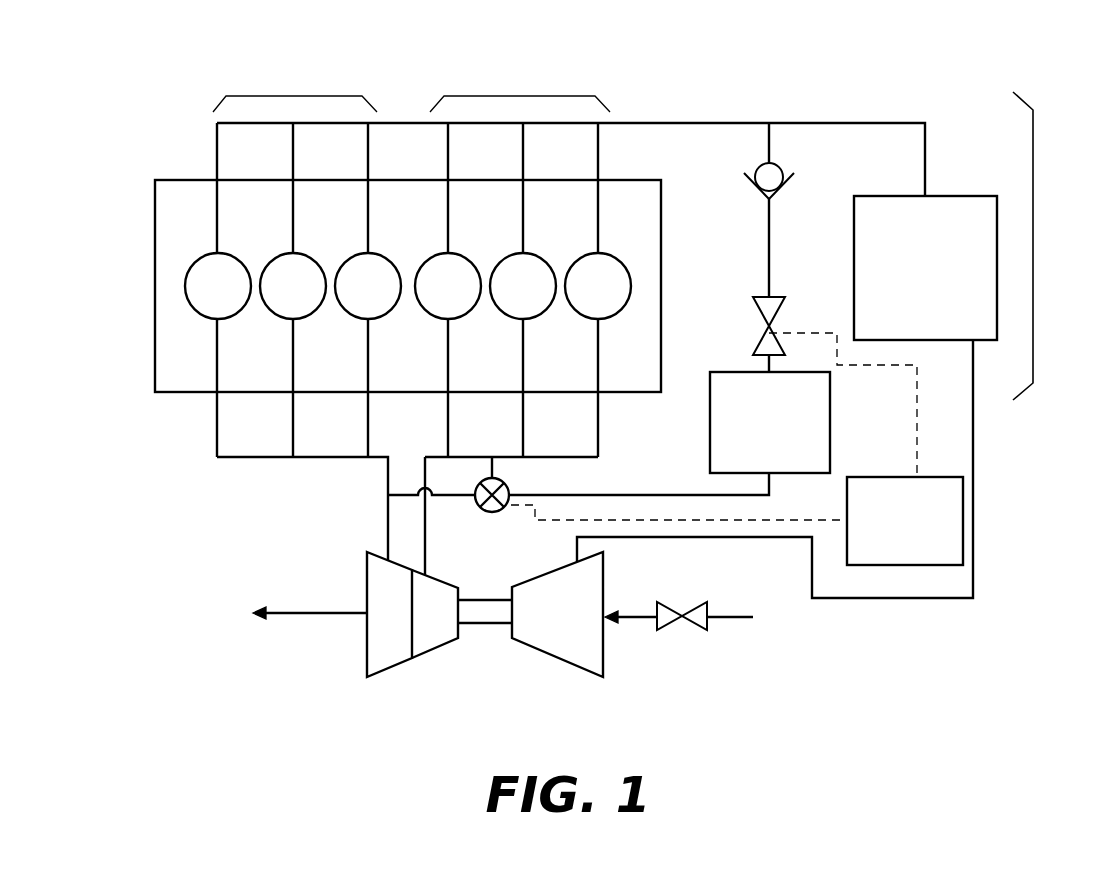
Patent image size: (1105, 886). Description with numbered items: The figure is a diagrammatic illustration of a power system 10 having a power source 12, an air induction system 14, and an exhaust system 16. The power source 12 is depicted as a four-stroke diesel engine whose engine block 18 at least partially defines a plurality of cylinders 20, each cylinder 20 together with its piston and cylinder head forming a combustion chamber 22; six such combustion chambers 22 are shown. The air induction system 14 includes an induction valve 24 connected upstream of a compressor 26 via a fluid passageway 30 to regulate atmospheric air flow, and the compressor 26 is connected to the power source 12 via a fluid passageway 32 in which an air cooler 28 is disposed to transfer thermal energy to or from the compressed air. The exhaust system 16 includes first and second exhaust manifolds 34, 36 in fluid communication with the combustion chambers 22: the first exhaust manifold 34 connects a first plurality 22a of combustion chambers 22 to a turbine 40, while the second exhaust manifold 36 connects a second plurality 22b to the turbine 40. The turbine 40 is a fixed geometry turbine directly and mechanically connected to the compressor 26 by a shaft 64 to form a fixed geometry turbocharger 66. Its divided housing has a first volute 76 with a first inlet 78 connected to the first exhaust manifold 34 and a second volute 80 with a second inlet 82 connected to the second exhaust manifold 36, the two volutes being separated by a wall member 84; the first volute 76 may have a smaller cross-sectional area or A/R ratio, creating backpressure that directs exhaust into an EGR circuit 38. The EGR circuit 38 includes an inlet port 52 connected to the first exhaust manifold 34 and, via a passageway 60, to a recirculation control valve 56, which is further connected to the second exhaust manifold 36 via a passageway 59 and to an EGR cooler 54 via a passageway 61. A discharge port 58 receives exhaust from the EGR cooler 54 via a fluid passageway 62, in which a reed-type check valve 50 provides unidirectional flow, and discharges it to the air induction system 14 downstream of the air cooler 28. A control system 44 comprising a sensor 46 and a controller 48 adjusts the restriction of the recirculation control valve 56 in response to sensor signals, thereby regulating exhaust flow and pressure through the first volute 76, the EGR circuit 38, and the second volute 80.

The power system 10 is at (863, 662).
The power source 12 is at (144, 399).
The air induction system 14 is at (1035, 243).
The exhaust system 16 is at (142, 610).
The engine block 18 is at (186, 379).
The cylinder 20 is at (188, 284).
The combustion chamber 22 is at (206, 270).
The first plurality of combustion chambers 22a is at (292, 96).
The second plurality of combustion chambers 22b is at (525, 96).
The induction valve 24 is at (690, 606).
The compressor 26 is at (596, 655).
The air cooler 28 is at (948, 194).
The fluid passageway 30 is at (622, 612).
The fluid passageway 32 is at (948, 600).
The first exhaust manifold 34 is at (425, 456).
The second exhaust manifold 36 is at (322, 458).
The exhaust gas recirculation (EGR) circuit 38 is at (824, 191).
The turbine 40 is at (362, 553).
The control system 44 is at (998, 557).
The sensor 46 is at (782, 316).
The controller 48 is at (876, 476).
The check valve 50 is at (755, 170).
The inlet port 52 is at (496, 462).
The EGR cooler 54 is at (708, 420).
The recirculation control valve 56 is at (492, 512).
The discharge port 58 is at (772, 128).
The passageway 59 is at (405, 493).
The passageway 60 is at (489, 466).
The passageway 61 is at (575, 490).
The fluid passageway 62 is at (771, 278).
The shaft 64 is at (496, 626).
The fixed geometry turbocharger 66 is at (250, 553).
The first volute 76 is at (445, 590).
The first inlet 78 is at (428, 578).
The second volute 80 is at (378, 558).
The second inlet 82 is at (395, 557).
The wall member 84 is at (412, 650).